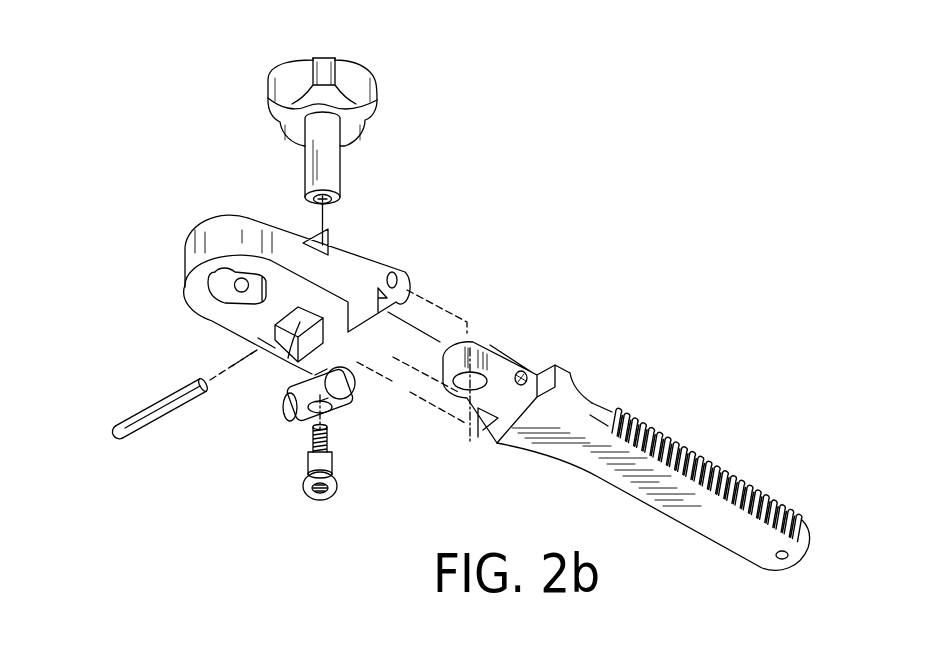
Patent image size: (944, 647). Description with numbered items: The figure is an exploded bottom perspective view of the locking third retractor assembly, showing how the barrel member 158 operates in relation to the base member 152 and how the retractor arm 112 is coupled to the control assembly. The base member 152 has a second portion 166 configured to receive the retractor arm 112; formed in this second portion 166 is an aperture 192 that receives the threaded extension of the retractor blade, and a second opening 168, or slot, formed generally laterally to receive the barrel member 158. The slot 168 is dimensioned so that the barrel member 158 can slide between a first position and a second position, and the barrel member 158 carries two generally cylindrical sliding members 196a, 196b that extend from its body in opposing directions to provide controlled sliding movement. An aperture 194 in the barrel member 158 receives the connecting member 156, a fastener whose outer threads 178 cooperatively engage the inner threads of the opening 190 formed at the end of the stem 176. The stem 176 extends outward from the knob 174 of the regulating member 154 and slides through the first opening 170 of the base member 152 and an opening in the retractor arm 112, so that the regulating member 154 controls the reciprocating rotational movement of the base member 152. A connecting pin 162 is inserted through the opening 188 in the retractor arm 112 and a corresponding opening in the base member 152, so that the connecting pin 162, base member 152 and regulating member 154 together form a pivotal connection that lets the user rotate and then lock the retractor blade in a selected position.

The retractor arm 112 is at (680, 443).
The base member 152 is at (351, 264).
The regulating member 154 is at (384, 125).
The connecting member 156 is at (305, 493).
The barrel member 158 is at (300, 420).
The connecting pin 162 is at (373, 244).
The second portion 166 is at (190, 255).
The second opening 168 is at (270, 350).
The first opening 170 is at (275, 338).
The knob 174 is at (355, 68).
The stem 176 is at (322, 158).
The outer threads 178 is at (325, 440).
The opening 188 is at (522, 376).
The opening 190 is at (312, 206).
The aperture 192 is at (223, 287).
The aperture 194 is at (324, 412).
The sliding member 196a is at (286, 410).
The sliding member 196b is at (347, 383).